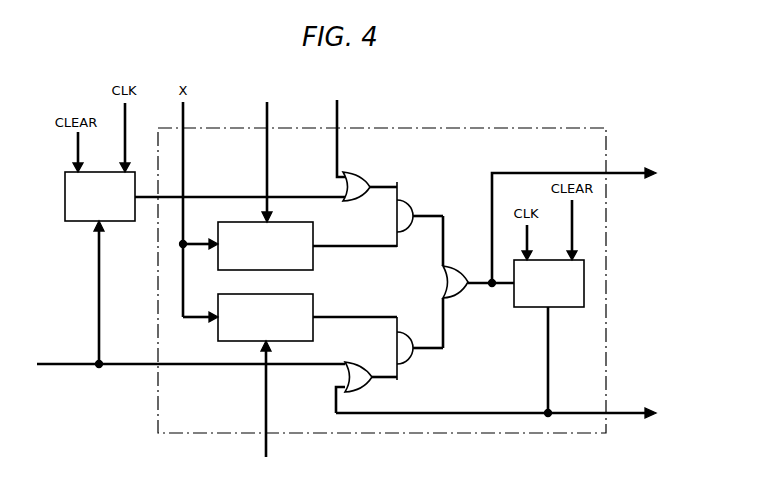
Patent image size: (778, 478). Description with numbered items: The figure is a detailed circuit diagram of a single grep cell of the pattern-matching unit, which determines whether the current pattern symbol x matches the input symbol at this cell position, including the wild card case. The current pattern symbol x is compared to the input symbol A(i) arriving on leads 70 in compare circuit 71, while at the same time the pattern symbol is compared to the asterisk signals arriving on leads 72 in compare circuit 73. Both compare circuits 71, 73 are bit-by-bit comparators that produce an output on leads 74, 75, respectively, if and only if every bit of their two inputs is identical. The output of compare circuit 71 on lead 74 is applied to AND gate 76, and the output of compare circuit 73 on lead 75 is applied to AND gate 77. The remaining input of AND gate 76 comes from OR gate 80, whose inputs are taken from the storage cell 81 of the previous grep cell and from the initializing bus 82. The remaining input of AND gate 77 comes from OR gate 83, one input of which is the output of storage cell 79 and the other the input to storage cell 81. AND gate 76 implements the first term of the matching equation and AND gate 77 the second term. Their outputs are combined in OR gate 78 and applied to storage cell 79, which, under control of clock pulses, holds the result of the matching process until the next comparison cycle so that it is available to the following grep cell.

The leads 70 is at (266, 164).
The compare circuit 71 is at (218, 264).
The leads 72 is at (265, 420).
The compare circuit 73 is at (218, 332).
The lead 74 is at (372, 250).
The lead 75 is at (376, 314).
The AND gate 76 is at (420, 214).
The AND gate 77 is at (420, 348).
The OR gate 78 is at (478, 282).
The storage cell 79 is at (533, 307).
The OR gate 80 is at (370, 181).
The storage cell 81 is at (65, 183).
The initializing bus 82 is at (335, 165).
The OR gate 83 is at (366, 381).